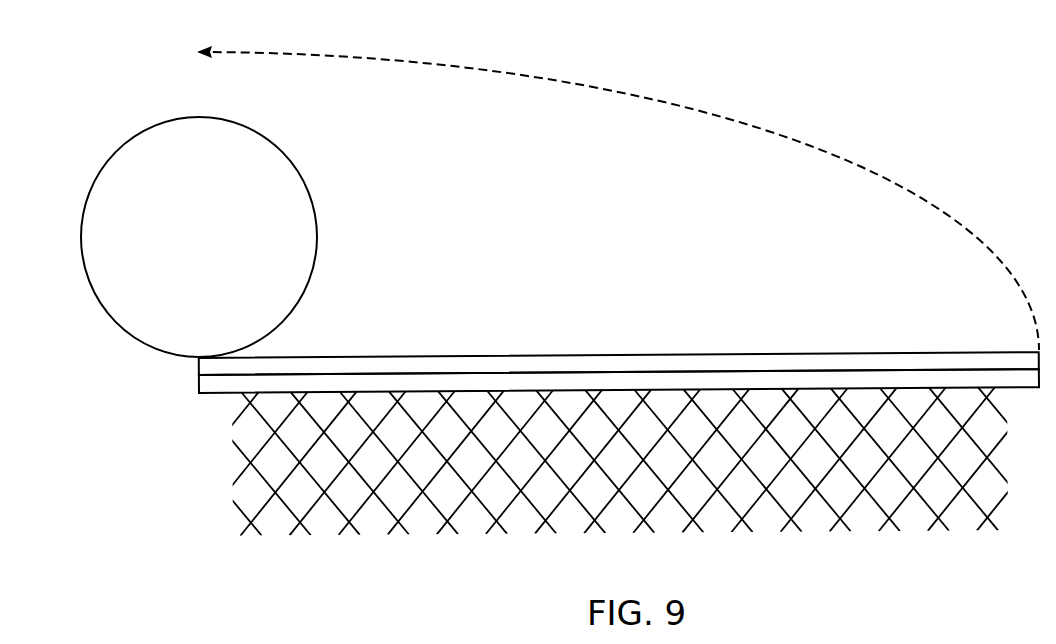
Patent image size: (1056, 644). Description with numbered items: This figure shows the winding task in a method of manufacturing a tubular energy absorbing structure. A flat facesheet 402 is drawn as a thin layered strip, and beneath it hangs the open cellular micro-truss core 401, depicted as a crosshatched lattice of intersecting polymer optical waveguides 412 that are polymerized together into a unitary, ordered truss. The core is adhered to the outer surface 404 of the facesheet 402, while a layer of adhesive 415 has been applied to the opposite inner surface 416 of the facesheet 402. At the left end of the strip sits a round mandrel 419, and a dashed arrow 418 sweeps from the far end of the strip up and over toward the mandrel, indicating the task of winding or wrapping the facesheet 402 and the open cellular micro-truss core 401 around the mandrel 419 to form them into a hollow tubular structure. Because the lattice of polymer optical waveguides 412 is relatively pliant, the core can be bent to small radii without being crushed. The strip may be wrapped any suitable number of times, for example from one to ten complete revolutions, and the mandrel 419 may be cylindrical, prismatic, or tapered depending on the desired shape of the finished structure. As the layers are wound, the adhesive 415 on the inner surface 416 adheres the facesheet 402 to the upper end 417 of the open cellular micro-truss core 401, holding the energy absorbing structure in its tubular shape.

The open cellular micro-truss core 401 is at (598, 492).
The facesheet 402 is at (492, 378).
The outer surface 404 is at (618, 352).
The polymer optical waveguides 412 is at (433, 512).
The layer of adhesive 415 is at (602, 365).
The inner surface 416 is at (618, 342).
The upper end 417 is at (598, 492).
The arrow 418 is at (638, 90).
The mandrel 419 is at (302, 210).